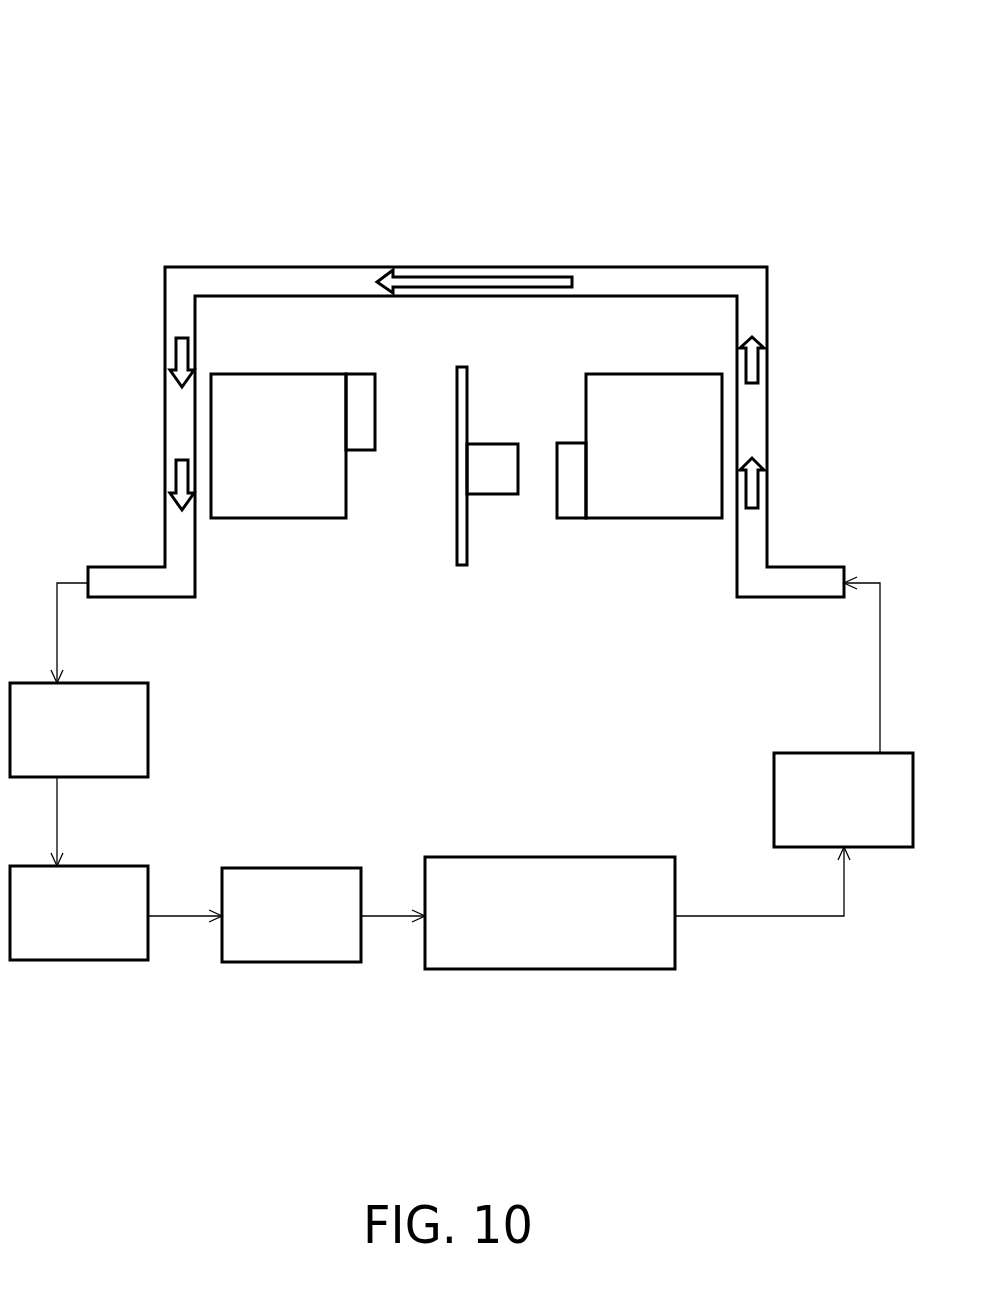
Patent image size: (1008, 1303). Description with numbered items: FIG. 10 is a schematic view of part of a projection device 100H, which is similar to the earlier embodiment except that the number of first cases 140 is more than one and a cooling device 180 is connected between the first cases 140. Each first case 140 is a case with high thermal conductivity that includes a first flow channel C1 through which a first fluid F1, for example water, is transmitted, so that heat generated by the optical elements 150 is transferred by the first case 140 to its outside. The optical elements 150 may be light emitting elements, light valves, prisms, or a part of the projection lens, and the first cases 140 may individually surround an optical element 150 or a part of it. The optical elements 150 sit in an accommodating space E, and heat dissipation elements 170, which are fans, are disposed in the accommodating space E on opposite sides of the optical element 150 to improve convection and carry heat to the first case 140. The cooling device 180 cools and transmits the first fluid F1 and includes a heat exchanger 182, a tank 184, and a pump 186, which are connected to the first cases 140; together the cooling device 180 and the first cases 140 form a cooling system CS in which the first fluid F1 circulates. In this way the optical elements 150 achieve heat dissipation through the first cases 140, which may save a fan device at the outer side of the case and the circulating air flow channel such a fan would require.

The projection device 100H is at (793, 250).
The cooling system CS is at (100, 215).
The first flow channel C1 is at (664, 283).
The first fluid F1 is at (478, 284).
The accommodating space E is at (250, 315).
The first case 140 is at (142, 737).
The optical element 150 is at (493, 483).
The heat dissipation element 170 is at (288, 508).
The cooling device 180 is at (80, 28).
The heat exchanger 182 is at (140, 883).
The tank 184 is at (321, 877).
The pump 186 is at (553, 865).